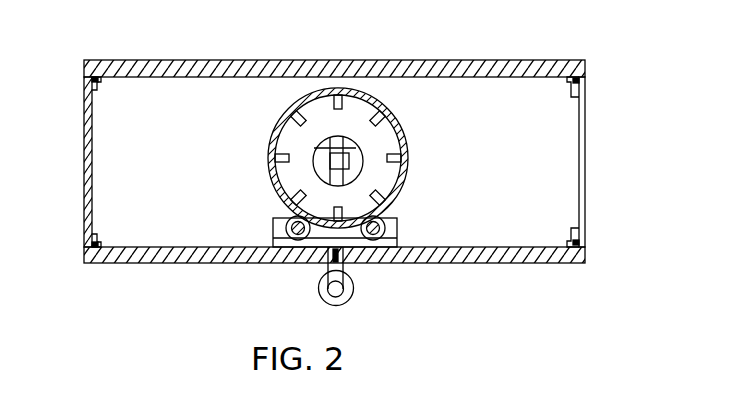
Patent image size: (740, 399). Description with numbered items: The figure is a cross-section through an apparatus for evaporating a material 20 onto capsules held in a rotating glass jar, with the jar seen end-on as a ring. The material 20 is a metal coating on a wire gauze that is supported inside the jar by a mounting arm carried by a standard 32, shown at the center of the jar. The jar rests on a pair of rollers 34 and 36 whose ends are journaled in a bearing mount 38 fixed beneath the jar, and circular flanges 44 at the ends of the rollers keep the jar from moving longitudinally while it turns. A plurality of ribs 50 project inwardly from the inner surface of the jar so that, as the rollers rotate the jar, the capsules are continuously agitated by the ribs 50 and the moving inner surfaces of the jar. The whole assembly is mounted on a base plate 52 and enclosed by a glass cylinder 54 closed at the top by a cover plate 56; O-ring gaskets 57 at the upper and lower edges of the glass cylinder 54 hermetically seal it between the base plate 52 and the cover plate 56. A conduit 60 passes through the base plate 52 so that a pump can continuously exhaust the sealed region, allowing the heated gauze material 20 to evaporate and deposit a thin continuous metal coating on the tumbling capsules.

The material 20 is at (357, 168).
The standard 32 is at (319, 141).
The roller 34 is at (287, 221).
The roller 36 is at (386, 219).
The bearing mount 38 is at (398, 240).
The circular flanges 44 is at (286, 229).
The ribs 50 is at (382, 142).
The base plate 52 is at (182, 258).
The glass cylinder 54 is at (83, 184).
The cover plate 56 is at (163, 69).
The O-ring gaskets 57 is at (89, 79).
The conduit 60 is at (319, 289).